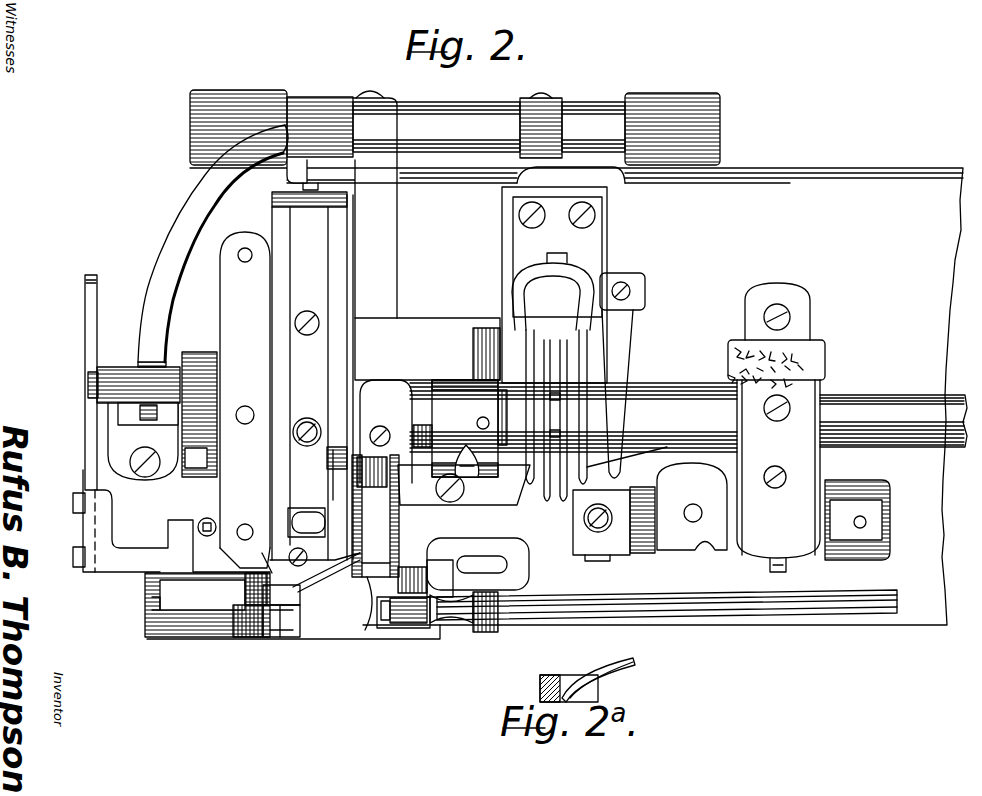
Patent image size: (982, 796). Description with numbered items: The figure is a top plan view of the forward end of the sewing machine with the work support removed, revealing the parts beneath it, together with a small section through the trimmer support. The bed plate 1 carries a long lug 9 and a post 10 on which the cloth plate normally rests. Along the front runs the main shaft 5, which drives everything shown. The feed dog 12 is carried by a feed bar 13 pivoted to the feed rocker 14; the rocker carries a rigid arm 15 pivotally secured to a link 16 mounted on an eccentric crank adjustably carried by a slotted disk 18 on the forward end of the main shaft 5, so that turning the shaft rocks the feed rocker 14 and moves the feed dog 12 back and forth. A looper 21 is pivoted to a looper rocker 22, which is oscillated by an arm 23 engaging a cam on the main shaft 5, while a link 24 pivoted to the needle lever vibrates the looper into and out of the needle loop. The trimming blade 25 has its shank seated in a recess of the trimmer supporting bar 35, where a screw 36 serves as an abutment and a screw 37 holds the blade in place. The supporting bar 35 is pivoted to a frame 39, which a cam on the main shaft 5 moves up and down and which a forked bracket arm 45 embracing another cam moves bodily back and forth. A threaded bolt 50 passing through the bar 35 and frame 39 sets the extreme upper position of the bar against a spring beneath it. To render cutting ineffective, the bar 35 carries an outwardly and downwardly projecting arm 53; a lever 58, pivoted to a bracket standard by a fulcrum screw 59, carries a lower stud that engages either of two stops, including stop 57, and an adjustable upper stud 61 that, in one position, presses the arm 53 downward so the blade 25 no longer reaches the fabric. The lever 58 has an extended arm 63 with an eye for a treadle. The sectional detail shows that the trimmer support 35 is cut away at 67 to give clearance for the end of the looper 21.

In FIG. 2, the bed plate 1 is at (555, 403).
In FIG. 2, the main shaft 5 is at (862, 396).
In FIG. 2, the long lug 9 is at (245, 400).
In FIG. 2, the post 10 is at (692, 506).
In FIG. 2, the feed dog 12 is at (390, 531).
In FIG. 2, the feed bar 13 is at (395, 285).
In FIG. 2, the feed rocker 14 is at (460, 122).
In FIG. 2, the rigid arm 15 is at (150, 230).
In FIG. 2, the link 16 is at (134, 421).
In FIG. 2, the slotted disk 18 is at (199, 414).
In FIG. 2, the looper 21 is at (512, 572).
In FIG. 2A, the looper 21 is at (608, 677).
In FIG. 2, the looper rocker 22 is at (580, 538).
In FIG. 2, the arm 23 is at (776, 427).
In FIG. 2, the link 24 is at (758, 612).
In FIG. 2, the trimming blade 25 is at (354, 562).
In FIG. 2, the trimmer supporting bar 35 is at (315, 376).
In FIG. 2A, the trimmer supporting bar 35 is at (538, 693).
In FIG. 2, the screw 36 is at (252, 561).
In FIG. 2, the screw 37 is at (312, 556).
In FIG. 2, the frame 39 is at (273, 318).
In FIG. 2, the bracket arm 45 is at (427, 349).
In FIG. 2, the threaded bolt 50 is at (295, 437).
In FIG. 2, the arm 53 is at (283, 598).
In FIG. 2, the stop 57 is at (298, 630).
In FIG. 2, the lever 58 is at (246, 637).
In FIG. 2, the fulcrum screw 59 is at (150, 612).
In FIG. 2, the stud 61 is at (278, 615).
In FIG. 2, the extended arm 63 is at (70, 345).
In FIG. 2, the cut-away 67 is at (292, 522).
In FIG. 2A, the cut-away 67 is at (565, 680).